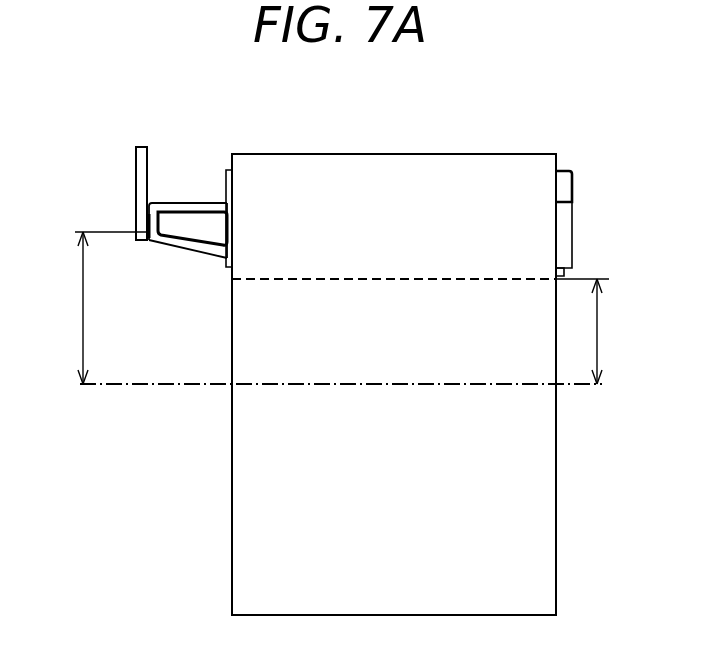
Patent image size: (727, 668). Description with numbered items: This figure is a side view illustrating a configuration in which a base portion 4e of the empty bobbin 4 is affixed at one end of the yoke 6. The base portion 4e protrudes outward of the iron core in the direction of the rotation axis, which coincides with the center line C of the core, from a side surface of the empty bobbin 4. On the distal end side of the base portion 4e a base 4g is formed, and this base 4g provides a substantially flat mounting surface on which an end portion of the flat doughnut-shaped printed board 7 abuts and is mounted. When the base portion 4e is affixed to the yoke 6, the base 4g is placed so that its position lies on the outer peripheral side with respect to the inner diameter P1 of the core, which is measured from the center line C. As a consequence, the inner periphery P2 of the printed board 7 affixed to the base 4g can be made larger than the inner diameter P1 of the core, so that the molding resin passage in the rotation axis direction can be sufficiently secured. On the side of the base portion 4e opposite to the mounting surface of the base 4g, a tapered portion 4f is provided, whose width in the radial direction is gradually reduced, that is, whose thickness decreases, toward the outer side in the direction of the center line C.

The yoke 6 is at (402, 165).
The printed board 7 is at (140, 170).
The empty bobbin 4 is at (149, 216).
The base portion 4e is at (197, 207).
The tapered portion 4f is at (180, 250).
The base 4g is at (147, 228).
The center line of the core C is at (391, 386).
The inner diameter of the core P1 is at (596, 331).
The inner diameter of the printed board P2 is at (95, 308).